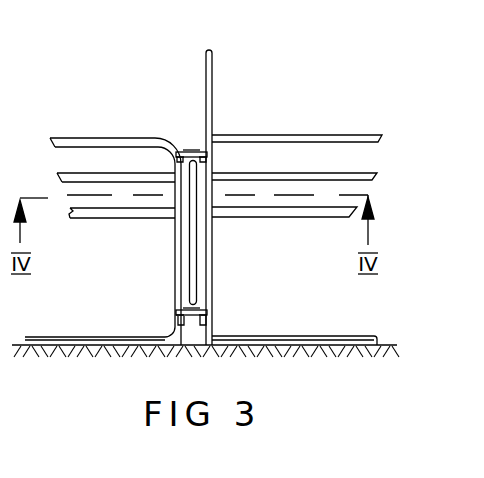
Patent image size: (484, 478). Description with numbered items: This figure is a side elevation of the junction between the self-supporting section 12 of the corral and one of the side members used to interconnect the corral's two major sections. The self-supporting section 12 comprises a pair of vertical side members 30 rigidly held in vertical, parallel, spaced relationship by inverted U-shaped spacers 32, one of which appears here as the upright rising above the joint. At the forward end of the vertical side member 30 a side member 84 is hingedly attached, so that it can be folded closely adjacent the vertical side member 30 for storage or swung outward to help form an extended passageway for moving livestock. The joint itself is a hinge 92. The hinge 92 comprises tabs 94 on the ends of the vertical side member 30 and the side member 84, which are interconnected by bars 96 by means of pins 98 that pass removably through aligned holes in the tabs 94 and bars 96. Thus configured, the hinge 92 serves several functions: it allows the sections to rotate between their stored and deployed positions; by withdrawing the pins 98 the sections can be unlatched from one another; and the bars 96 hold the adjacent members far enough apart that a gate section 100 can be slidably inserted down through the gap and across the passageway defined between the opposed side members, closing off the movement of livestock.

The self-supporting section 12 is at (287, 98).
The vertical side member 30 is at (300, 135).
The inverted U-shaped spacer 32 is at (212, 80).
The side member 84 is at (83, 138).
The hinge 92 is at (186, 133).
The tab 94 is at (178, 161).
The bar 96 is at (190, 149).
The pin 98 is at (180, 152).
The gate section 100 is at (193, 235).